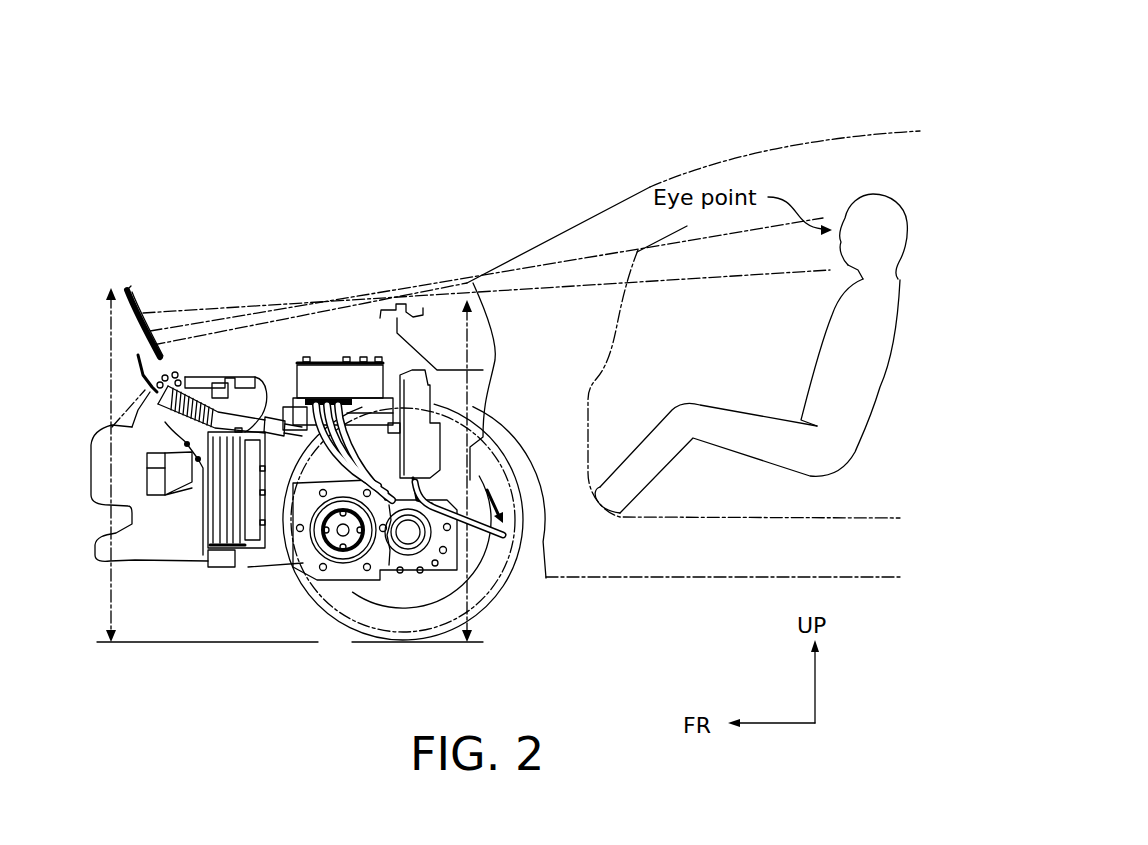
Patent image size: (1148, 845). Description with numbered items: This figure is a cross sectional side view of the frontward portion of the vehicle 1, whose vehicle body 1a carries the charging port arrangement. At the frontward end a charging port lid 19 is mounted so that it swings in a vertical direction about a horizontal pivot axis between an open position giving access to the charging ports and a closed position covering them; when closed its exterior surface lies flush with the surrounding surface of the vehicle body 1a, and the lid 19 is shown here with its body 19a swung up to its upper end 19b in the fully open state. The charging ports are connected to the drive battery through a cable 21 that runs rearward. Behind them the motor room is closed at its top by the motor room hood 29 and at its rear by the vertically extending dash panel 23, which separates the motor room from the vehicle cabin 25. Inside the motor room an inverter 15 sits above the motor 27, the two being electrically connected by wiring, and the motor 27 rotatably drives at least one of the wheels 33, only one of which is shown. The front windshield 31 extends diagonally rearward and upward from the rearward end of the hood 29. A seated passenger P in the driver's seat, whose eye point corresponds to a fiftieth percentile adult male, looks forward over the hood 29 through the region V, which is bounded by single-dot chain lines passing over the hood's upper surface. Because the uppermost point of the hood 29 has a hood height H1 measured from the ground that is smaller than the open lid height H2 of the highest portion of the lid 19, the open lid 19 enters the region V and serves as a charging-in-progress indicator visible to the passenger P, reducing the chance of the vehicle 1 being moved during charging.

The vehicle 1 is at (411, 97).
The vehicle body 1a is at (803, 130).
The inverter 15 is at (327, 382).
The charging port lid 19 is at (147, 303).
The mirror body 19a is at (147, 324).
The mirror upper end 19b is at (113, 288).
The cable 21 is at (267, 390).
The dash panel 23 is at (471, 282).
The vehicle cabin 25 is at (527, 327).
The motor 27 is at (340, 616).
The motor room hood 29 is at (243, 322).
The front windshield 31 is at (627, 192).
The wheels 33 is at (420, 620).
The region V is at (215, 307).
The seated passenger P is at (862, 380).
The hood height H1 is at (491, 592).
The open lid height H2 is at (140, 531).